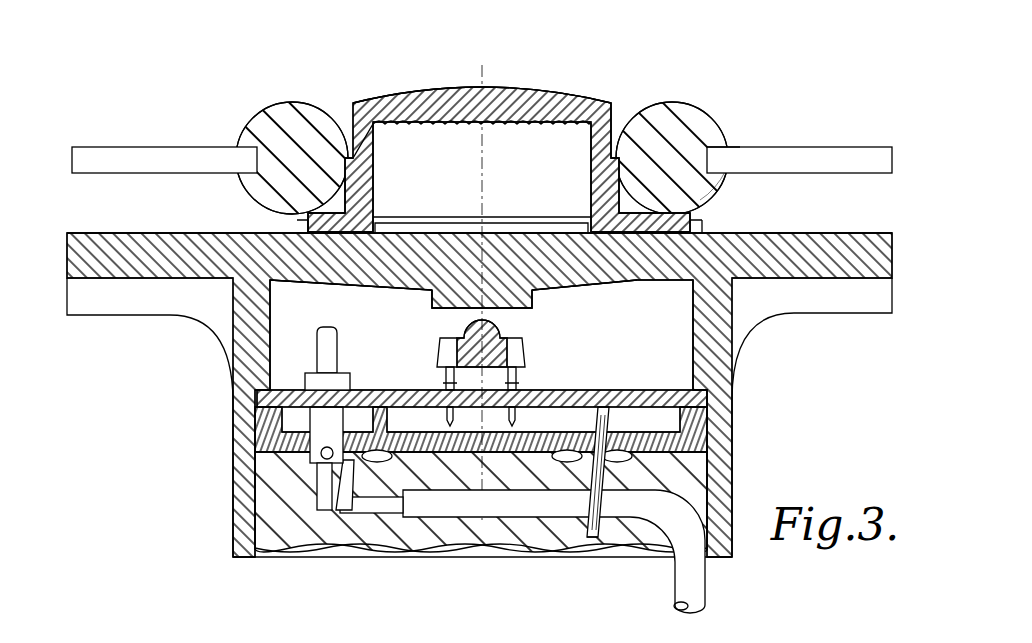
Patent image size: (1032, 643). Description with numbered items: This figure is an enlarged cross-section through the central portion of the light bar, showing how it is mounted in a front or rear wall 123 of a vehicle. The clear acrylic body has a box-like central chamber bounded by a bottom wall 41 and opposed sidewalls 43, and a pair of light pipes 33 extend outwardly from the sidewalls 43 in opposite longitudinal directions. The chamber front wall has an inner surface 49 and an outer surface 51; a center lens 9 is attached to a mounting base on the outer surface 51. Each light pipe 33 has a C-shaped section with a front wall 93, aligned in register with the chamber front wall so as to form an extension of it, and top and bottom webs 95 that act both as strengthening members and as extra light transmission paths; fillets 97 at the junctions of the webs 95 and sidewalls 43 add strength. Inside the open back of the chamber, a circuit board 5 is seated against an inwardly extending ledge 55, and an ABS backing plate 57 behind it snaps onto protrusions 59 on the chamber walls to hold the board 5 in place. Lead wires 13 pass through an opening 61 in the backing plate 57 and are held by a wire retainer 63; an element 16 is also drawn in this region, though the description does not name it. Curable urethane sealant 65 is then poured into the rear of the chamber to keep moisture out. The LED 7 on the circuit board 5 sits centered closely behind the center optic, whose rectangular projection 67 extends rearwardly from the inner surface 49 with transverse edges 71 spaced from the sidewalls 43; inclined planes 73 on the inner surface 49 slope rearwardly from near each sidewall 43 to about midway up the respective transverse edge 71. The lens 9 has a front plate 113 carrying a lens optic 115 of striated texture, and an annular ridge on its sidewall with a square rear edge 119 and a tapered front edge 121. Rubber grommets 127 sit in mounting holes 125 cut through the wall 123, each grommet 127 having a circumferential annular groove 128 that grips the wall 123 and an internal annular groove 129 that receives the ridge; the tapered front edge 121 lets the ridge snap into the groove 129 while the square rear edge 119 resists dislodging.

The circuit board 5 is at (622, 387).
The LED 7 is at (525, 350).
The center lens 9 is at (556, 80).
The lead wires 13 is at (707, 583).
The conductor 16 is at (318, 492).
The light pipes 33 is at (67, 232).
The bottom wall 41 is at (352, 553).
The sidewalls 43 is at (235, 484).
The inner surface 49 is at (317, 282).
The outer surface 51 is at (370, 214).
The ledge 55 is at (257, 398).
The backing plate 57 is at (258, 426).
The protrusions 59 is at (362, 462).
The opening 61 is at (352, 425).
The wire retainer 63 is at (588, 536).
The sealant 65 is at (383, 550).
The projection 67 is at (520, 309).
The transverse edges 71 is at (432, 290).
The inclined planes 73 is at (368, 283).
The front wall 93 is at (100, 232).
The webs 95 is at (100, 316).
The fillets 97 is at (200, 323).
The front plate 113 is at (404, 99).
The lens optic 115 is at (503, 123).
The square rear edge 119 is at (722, 207).
The tapered front edge 121 is at (613, 157).
The vehicle wall 123 is at (845, 152).
The mounting holes 125 is at (260, 172).
The rubber grommets 127 is at (292, 103).
The circumferential annular groove 128 is at (728, 147).
The internal annular groove 129 is at (300, 221).